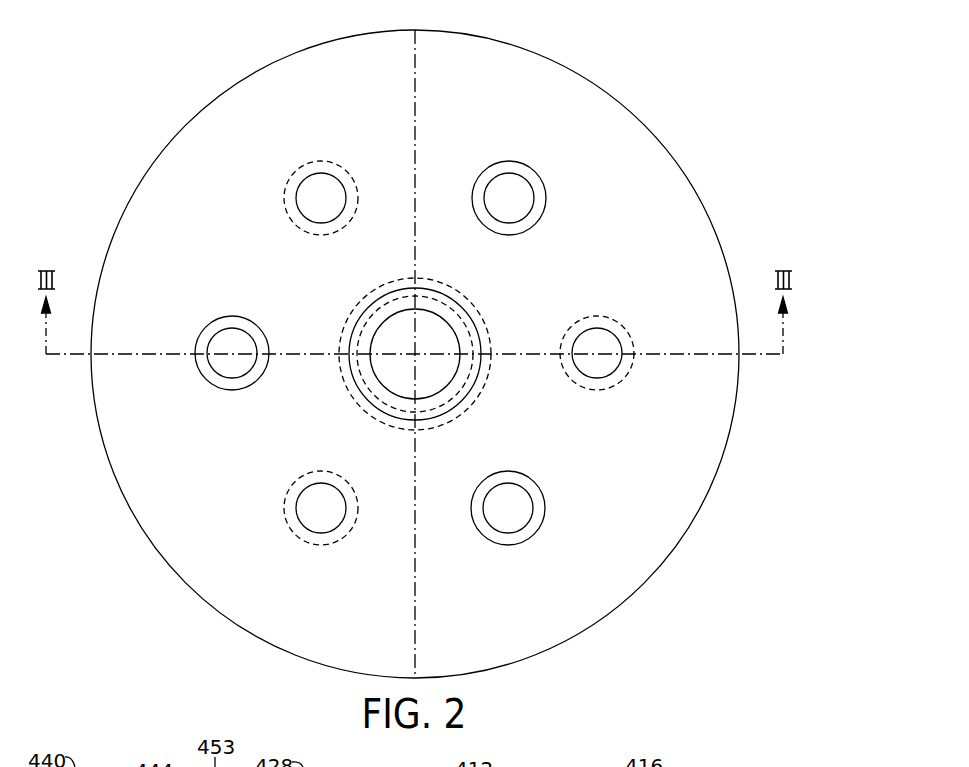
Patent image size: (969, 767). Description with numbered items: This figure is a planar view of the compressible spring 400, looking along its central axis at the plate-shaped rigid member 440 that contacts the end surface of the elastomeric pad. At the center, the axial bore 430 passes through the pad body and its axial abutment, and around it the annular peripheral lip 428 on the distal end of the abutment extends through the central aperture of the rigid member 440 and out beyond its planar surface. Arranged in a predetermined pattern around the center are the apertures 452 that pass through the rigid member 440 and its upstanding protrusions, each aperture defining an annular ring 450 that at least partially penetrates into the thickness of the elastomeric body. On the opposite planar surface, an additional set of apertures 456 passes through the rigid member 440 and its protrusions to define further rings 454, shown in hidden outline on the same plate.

The compressible spring 400 is at (433, 354).
The rigid member 440 is at (712, 195).
The axial bore 430 is at (444, 322).
The peripheral lip 428 is at (480, 335).
The ring 454 is at (218, 390).
The aperture 456 is at (217, 340).
The ring 450 is at (625, 377).
The aperture 452 is at (606, 343).